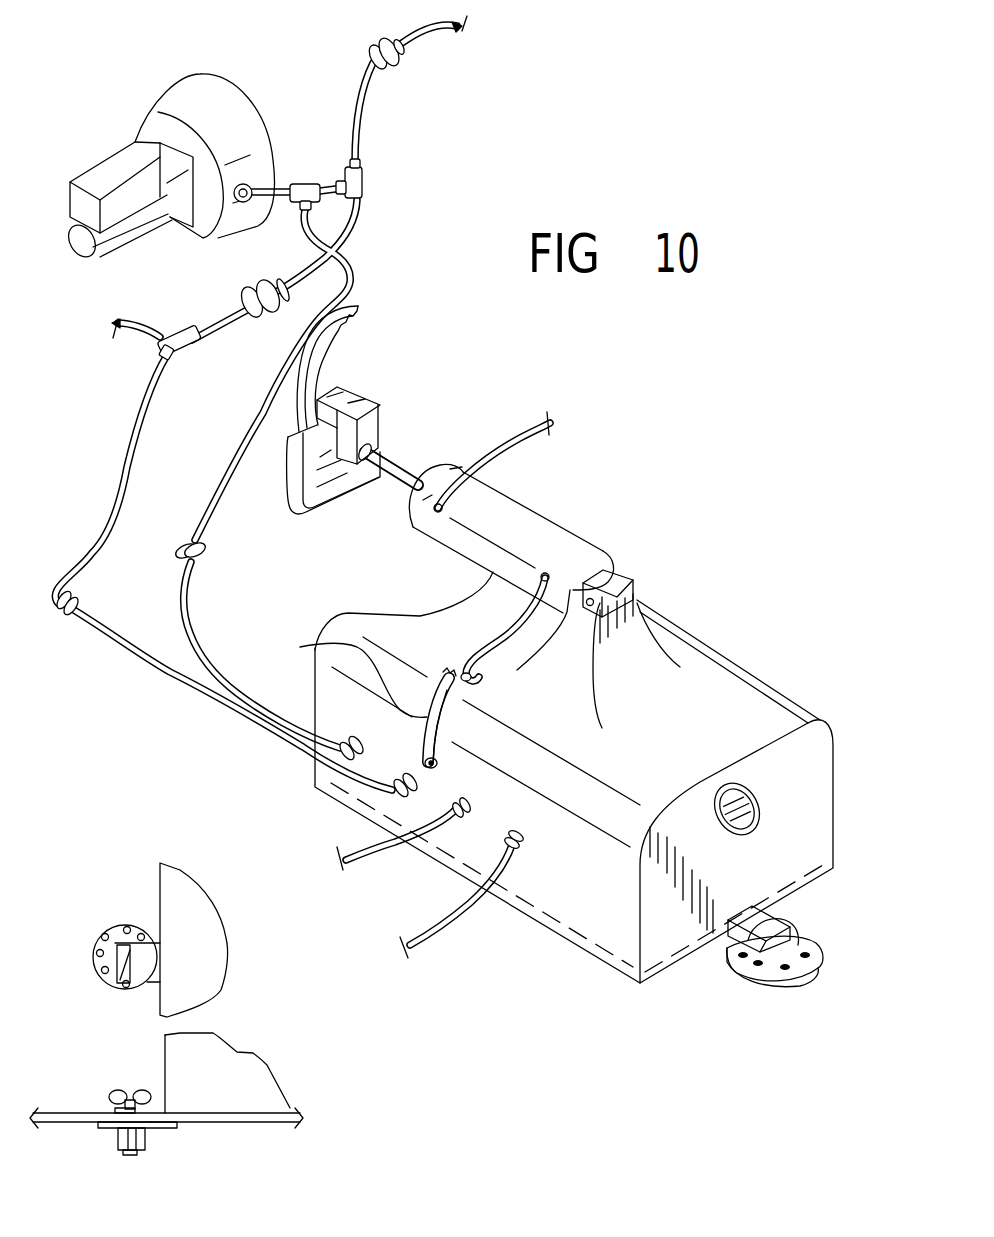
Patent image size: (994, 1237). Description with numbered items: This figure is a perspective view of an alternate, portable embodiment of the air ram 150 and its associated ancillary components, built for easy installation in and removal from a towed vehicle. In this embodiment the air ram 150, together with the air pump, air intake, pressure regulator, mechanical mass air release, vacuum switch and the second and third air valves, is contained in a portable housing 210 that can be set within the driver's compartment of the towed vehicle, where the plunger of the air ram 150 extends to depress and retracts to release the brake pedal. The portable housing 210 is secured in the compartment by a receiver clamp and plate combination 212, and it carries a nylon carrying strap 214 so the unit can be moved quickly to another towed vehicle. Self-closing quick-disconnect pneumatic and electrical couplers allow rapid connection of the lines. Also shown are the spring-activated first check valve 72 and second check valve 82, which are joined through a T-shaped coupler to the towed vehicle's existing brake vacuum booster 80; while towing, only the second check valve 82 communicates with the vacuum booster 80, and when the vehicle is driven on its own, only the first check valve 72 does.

The first check valve 72 is at (243, 284).
The brake vacuum booster 80 is at (253, 157).
The second check valve 82 is at (374, 51).
The air ram 150 is at (528, 518).
The portable housing 210 is at (660, 637).
The receiver clamp and plate combination 212 is at (802, 947).
The nylon carrying strap 214 is at (312, 644).